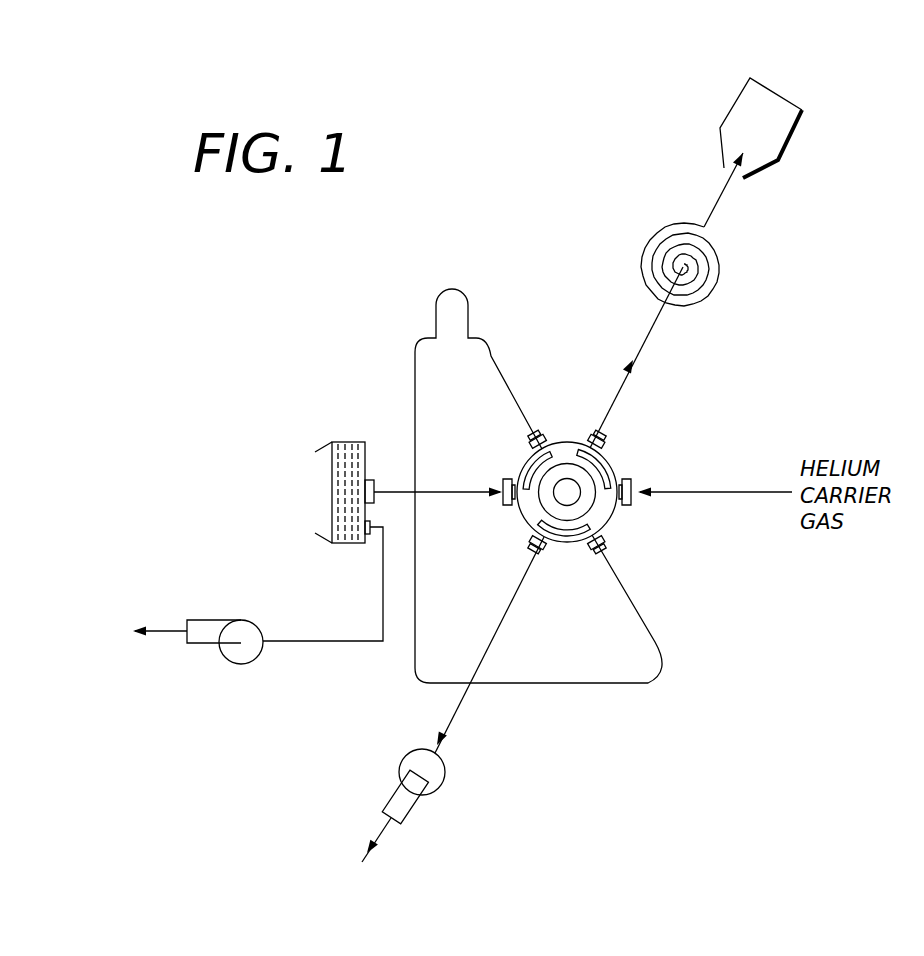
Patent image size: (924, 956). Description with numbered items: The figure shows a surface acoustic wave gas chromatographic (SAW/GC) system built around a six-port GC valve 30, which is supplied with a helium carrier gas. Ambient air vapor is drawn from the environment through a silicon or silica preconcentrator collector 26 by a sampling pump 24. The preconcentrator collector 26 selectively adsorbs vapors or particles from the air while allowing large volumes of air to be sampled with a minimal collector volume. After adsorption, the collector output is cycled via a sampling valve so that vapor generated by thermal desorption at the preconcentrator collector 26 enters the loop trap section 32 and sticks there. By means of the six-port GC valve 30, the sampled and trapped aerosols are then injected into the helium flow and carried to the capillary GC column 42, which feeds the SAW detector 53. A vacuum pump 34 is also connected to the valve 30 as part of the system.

The sampling pump 24 is at (240, 664).
The preconcentrator collector 26 is at (318, 500).
The six-port GC valve 30 is at (634, 527).
The loop trap section 32 is at (452, 290).
The vacuum pump 34 is at (445, 776).
The capillary GC column 42 is at (740, 237).
The SAW detector 53 is at (780, 87).